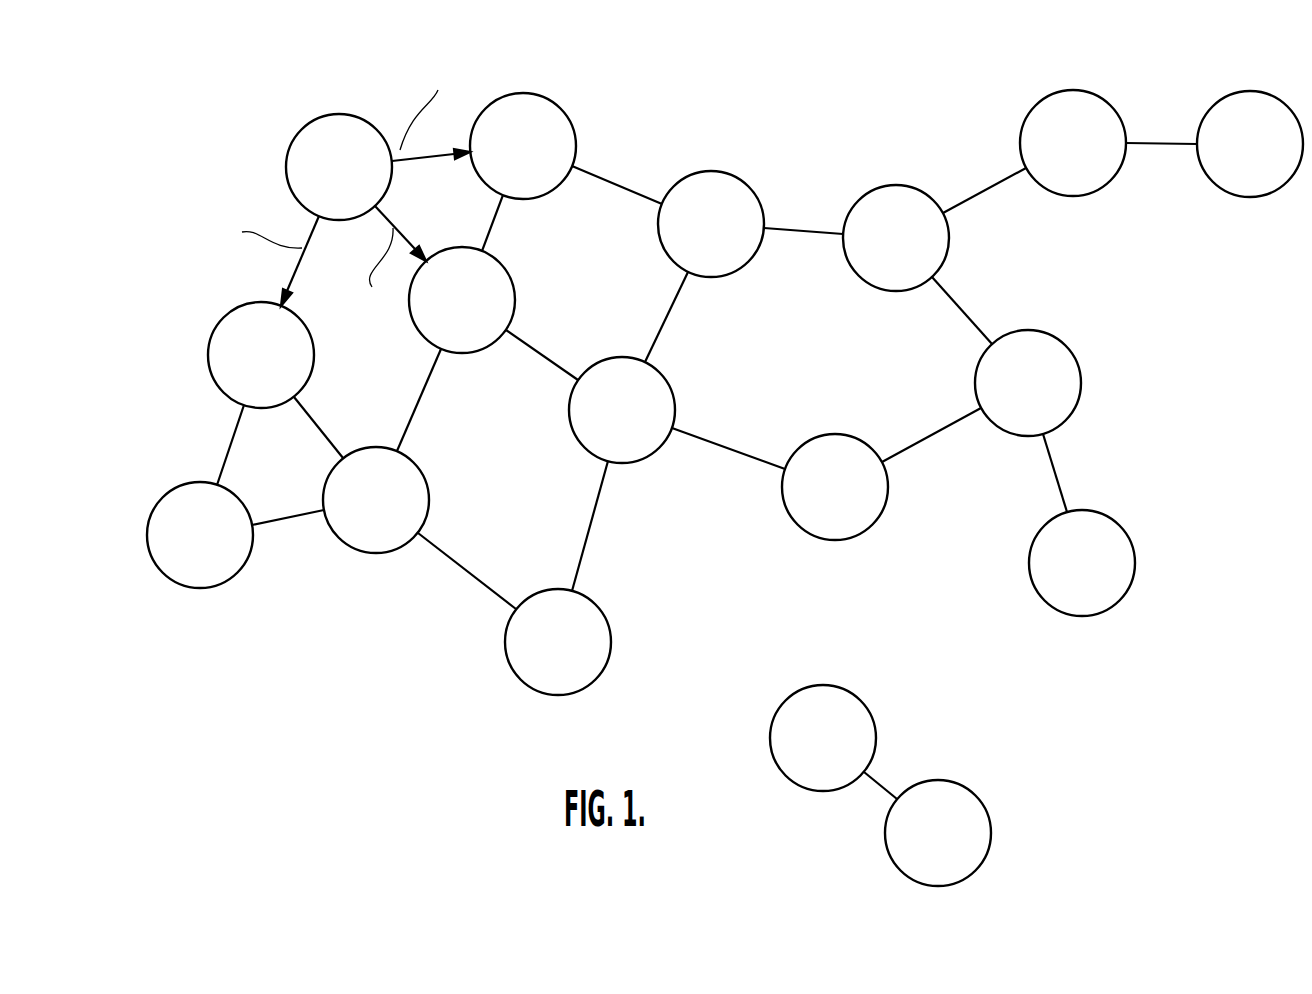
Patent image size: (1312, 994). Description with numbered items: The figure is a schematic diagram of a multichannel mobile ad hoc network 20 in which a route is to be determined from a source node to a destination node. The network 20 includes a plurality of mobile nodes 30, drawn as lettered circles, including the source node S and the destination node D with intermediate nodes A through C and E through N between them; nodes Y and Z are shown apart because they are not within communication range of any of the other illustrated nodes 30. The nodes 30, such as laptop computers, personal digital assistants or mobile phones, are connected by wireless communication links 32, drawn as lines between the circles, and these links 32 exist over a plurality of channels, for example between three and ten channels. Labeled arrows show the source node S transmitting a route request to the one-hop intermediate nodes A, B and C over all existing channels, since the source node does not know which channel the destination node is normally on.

The mobile ad hoc network 20 is at (786, 96).
The mobile nodes 30 is at (290, 140).
The wireless communication links 32 is at (222, 450).